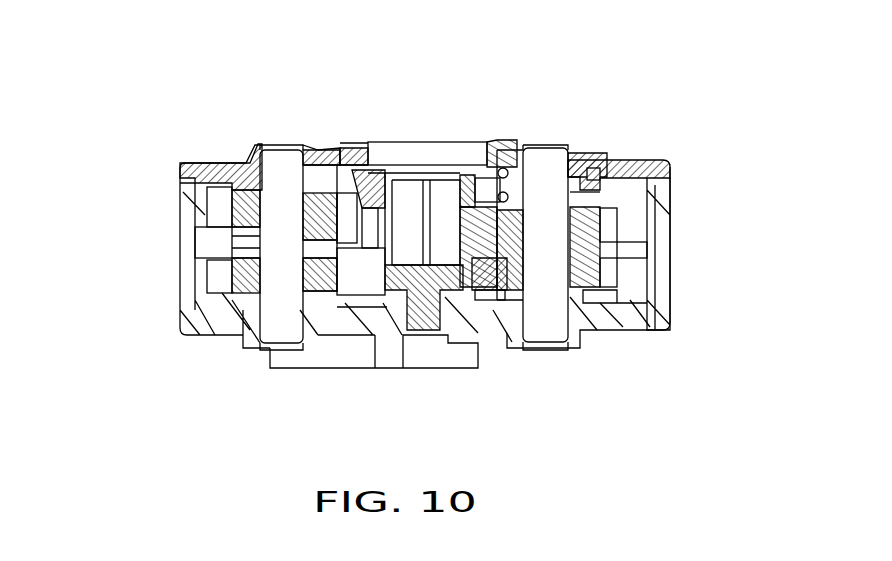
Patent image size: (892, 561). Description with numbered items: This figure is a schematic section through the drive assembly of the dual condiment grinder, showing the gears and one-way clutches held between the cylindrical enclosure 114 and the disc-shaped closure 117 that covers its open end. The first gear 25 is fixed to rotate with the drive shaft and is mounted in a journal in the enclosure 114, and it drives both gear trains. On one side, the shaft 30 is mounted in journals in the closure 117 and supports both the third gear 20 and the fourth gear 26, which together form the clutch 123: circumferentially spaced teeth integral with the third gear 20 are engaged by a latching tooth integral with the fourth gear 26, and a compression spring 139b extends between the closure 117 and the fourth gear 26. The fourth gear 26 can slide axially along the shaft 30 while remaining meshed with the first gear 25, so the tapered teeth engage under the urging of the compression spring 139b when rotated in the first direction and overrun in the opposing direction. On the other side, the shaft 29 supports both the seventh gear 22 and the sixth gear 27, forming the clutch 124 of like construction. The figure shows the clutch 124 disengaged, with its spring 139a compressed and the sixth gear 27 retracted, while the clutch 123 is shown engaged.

The spring 139a is at (232, 160).
The compression spring 139b is at (583, 192).
The shaft 29 is at (285, 175).
The shaft 30 is at (545, 165).
The first gear 25 is at (467, 218).
The closure 117 is at (660, 180).
The sixth gear 27 is at (210, 222).
The clutch 124 is at (215, 250).
The seventh gear 22 is at (213, 278).
The fourth gear 26 is at (620, 225).
The clutch 123 is at (632, 250).
The third gear 20 is at (620, 268).
The enclosure 114 is at (617, 323).